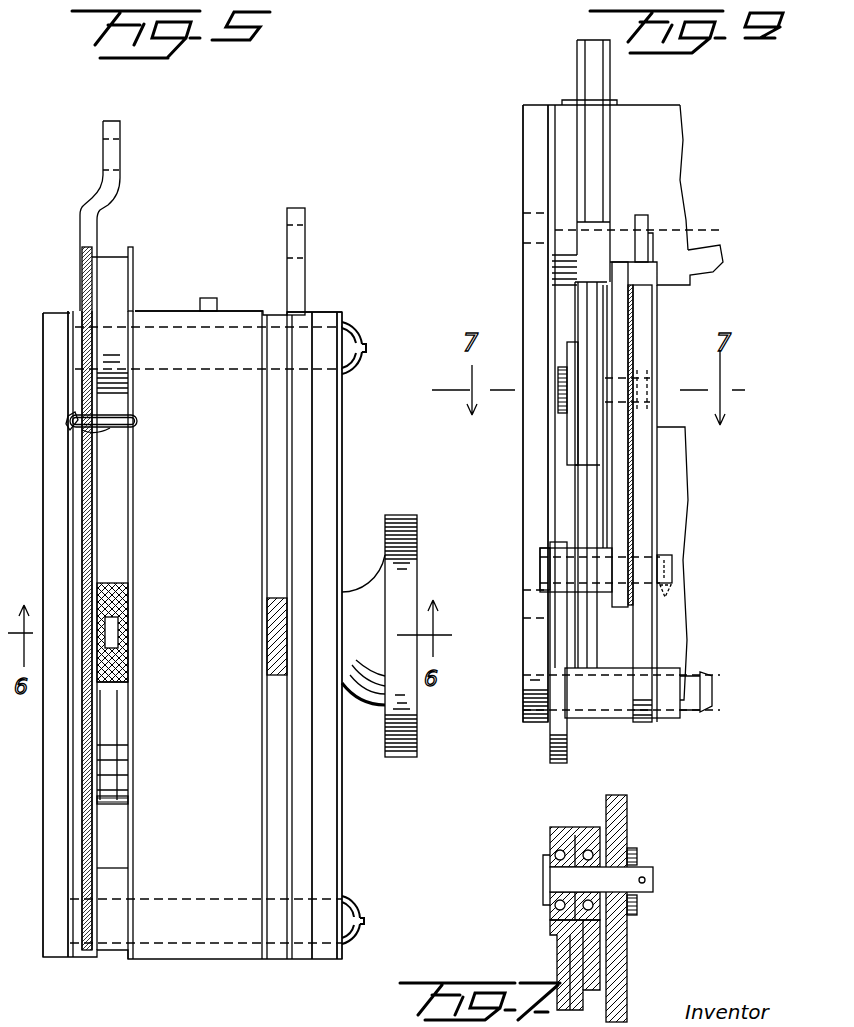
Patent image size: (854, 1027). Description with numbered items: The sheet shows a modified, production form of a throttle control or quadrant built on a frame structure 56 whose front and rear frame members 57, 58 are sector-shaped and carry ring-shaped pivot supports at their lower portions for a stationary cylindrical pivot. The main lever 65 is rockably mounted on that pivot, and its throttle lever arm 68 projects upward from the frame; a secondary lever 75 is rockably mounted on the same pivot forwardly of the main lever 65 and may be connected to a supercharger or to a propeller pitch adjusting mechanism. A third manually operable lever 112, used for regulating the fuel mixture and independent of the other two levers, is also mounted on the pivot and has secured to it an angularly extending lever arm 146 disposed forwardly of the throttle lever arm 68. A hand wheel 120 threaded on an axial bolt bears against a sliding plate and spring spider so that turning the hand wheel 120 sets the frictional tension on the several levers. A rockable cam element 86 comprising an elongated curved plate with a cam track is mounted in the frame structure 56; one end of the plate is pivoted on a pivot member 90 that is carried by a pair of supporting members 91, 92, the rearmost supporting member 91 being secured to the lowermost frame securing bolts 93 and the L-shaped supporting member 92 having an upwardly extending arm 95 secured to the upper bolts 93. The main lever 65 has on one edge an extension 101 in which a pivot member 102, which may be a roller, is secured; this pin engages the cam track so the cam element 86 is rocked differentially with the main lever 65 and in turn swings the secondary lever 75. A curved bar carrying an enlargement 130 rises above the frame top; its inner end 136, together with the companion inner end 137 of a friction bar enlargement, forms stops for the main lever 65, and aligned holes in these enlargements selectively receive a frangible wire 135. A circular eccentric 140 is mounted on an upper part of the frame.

In FIG. 5, the frame structure 56 is at (328, 311).
In FIG. 5, the front frame member 57 is at (330, 455).
In FIG. 5, the rear frame member 58 is at (55, 477).
In FIG. 5, the main lever 65 is at (125, 625).
In FIG. 9, the main lever 65 is at (586, 75).
In FIG. 5, the throttle lever arm 68 is at (112, 190).
In FIG. 5, the secondary lever 75 is at (217, 300).
In FIG. 9, the cam element 86 is at (633, 322).
In FIG. 7, the cam element 86 is at (620, 815).
In FIG. 9, the pivot member 90 is at (672, 572).
In FIG. 9, the supporting member 91 is at (567, 749).
In FIG. 9, the supporting member 92 is at (645, 648).
In FIG. 5, the frame securing bolts 93 is at (152, 312).
In FIG. 9, the upwardly extending arm 95 is at (645, 500).
In FIG. 5, the extension 101 is at (110, 723).
In FIG. 9, the extension 101 is at (578, 450).
In FIG. 7, the extension 101 is at (572, 963).
In FIG. 9, the pivot member 102 is at (560, 380).
In FIG. 7, the pivot member 102 is at (655, 873).
In FIG. 5, the third manually operable lever 112 is at (262, 580).
In FIG. 5, the hand wheel 120 is at (405, 757).
In FIG. 5, the enlargement 130 is at (92, 280).
In FIG. 9, the enlargement 130 is at (565, 143).
In FIG. 5, the frangible wire 135 is at (110, 427).
In FIG. 5, the inner end 136 is at (82, 430).
In FIG. 5, the inner end 137 is at (137, 418).
In FIG. 5, the circular eccentric 140 is at (117, 273).
In FIG. 5, the lever arm 146 is at (297, 270).